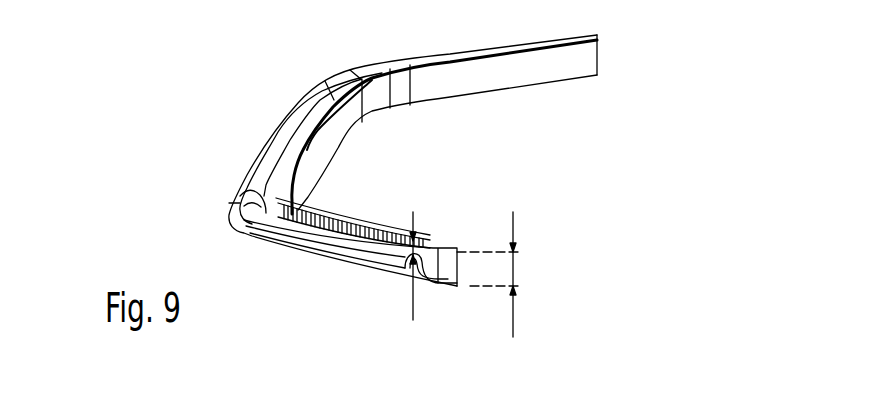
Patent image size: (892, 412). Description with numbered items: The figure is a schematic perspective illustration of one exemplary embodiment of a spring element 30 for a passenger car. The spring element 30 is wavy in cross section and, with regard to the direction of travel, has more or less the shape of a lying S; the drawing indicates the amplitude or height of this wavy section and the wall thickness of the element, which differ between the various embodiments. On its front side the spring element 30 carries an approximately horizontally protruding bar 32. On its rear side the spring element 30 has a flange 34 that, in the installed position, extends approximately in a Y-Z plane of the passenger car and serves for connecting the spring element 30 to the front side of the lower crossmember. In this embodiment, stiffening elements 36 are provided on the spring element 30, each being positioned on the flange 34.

The spring element 30 is at (557, 157).
The bar 32 is at (381, 266).
The flange 34 is at (597, 60).
The stiffening elements 36 is at (362, 218).